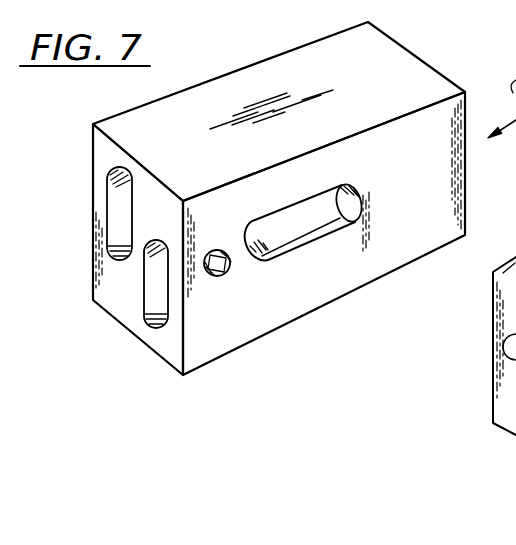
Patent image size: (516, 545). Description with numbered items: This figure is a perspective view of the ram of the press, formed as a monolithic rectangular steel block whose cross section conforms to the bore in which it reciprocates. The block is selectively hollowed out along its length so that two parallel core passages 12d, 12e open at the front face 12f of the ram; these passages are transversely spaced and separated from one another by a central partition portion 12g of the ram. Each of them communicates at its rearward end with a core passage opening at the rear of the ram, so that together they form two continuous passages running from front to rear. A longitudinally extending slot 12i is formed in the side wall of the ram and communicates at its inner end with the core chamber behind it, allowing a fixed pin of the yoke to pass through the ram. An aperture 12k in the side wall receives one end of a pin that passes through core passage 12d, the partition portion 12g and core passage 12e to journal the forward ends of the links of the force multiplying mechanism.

The core passage 12d is at (110, 201).
The core passage 12e is at (158, 308).
The front face 12f is at (127, 312).
The central partition portion 12g is at (128, 281).
The aperture 12k is at (228, 268).
The slot 12i is at (360, 217).